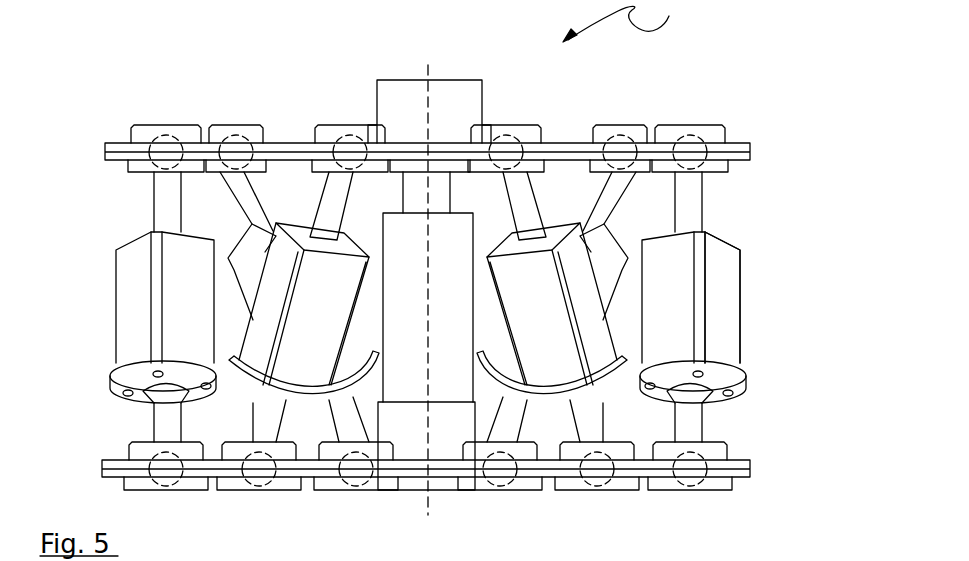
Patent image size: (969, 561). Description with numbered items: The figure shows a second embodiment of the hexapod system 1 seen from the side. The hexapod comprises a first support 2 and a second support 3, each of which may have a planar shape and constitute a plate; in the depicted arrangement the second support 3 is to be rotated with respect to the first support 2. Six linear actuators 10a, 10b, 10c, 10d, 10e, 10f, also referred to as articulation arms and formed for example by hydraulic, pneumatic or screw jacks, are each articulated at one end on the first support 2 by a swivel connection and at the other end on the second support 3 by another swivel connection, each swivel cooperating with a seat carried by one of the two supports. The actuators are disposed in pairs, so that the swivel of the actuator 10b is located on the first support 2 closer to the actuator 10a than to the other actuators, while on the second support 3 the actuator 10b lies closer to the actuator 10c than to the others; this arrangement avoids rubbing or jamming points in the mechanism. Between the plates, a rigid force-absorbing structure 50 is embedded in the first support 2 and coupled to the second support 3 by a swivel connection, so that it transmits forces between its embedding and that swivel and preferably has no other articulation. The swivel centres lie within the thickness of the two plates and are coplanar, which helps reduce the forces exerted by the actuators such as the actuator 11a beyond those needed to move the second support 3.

The positioning device 1 is at (616, 21).
The first support 2 is at (750, 477).
The second support 3 is at (748, 148).
The force-absorbing structure 50 is at (405, 250).
The linear actuator 10a is at (707, 232).
The linear actuator 10b is at (608, 252).
The linear actuator 10c is at (565, 365).
The linear actuator 10d is at (295, 232).
The linear actuator 10e is at (237, 250).
The linear actuator 10f is at (145, 237).
The actuator 11a is at (720, 323).